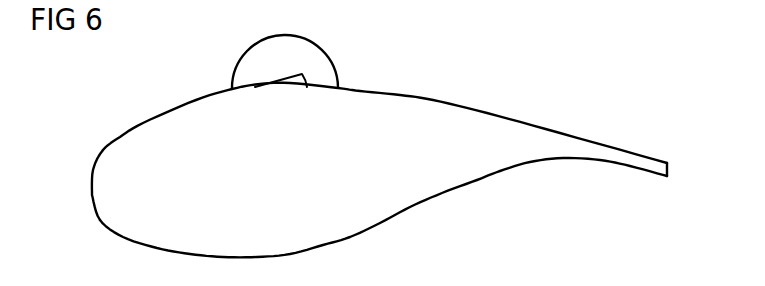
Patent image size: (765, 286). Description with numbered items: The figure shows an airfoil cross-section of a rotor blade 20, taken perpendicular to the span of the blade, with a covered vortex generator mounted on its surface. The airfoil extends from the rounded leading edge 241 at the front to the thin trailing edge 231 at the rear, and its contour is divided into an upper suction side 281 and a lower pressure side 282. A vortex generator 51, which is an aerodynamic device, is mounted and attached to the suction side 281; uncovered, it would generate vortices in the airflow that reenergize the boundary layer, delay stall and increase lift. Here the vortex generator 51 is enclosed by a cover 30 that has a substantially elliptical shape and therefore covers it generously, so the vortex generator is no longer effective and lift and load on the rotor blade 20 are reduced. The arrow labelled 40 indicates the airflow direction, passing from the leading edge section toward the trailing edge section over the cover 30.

The rotor blade 20 is at (380, 153).
The cover 30 is at (260, 58).
The airflow direction 40 is at (605, 95).
The vortex generator 51 is at (295, 85).
The trailing edge 231 is at (668, 168).
The leading edge 241 is at (92, 195).
The suction side 281 is at (432, 98).
The pressure side 282 is at (442, 193).